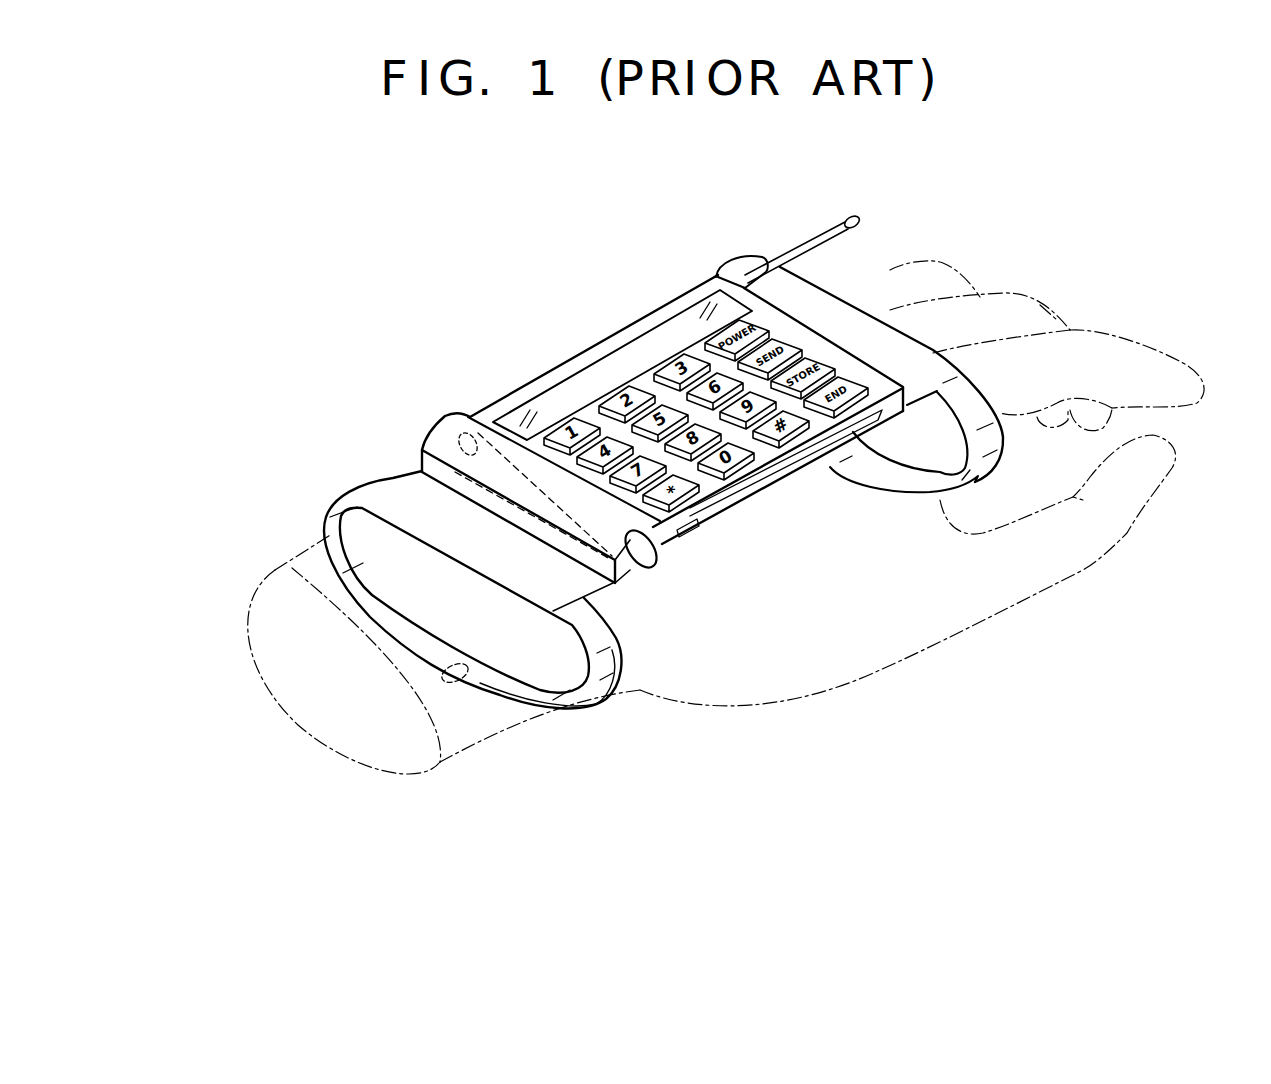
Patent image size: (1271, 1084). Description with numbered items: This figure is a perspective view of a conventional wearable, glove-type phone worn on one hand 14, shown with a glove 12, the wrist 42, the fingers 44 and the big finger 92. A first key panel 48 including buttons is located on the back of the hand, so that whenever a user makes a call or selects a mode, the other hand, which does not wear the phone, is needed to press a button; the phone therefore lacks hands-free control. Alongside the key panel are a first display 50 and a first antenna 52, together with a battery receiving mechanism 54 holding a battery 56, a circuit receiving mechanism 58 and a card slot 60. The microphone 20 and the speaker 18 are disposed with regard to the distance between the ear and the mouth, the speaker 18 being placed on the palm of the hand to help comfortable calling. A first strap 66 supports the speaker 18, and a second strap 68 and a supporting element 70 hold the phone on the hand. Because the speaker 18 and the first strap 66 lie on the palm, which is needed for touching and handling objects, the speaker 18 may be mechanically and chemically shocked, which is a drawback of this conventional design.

The glove 12 is at (382, 430).
The hand 14 is at (1126, 532).
The speaker 18 is at (846, 462).
The microphone 20 is at (455, 690).
The wrist 42 is at (292, 558).
The fingers 44 is at (1041, 305).
The first key panel 48 is at (720, 486).
The first display 50 is at (546, 413).
The first antenna 52 is at (802, 246).
The battery receiving mechanism 54 is at (446, 428).
The battery 56 is at (466, 430).
The circuit receiving mechanism 58 is at (775, 482).
The card slot 60 is at (688, 528).
The first strap 66 is at (998, 463).
The second strap 68 is at (596, 697).
The supporting element 70 is at (890, 343).
The big finger 92 is at (1080, 553).